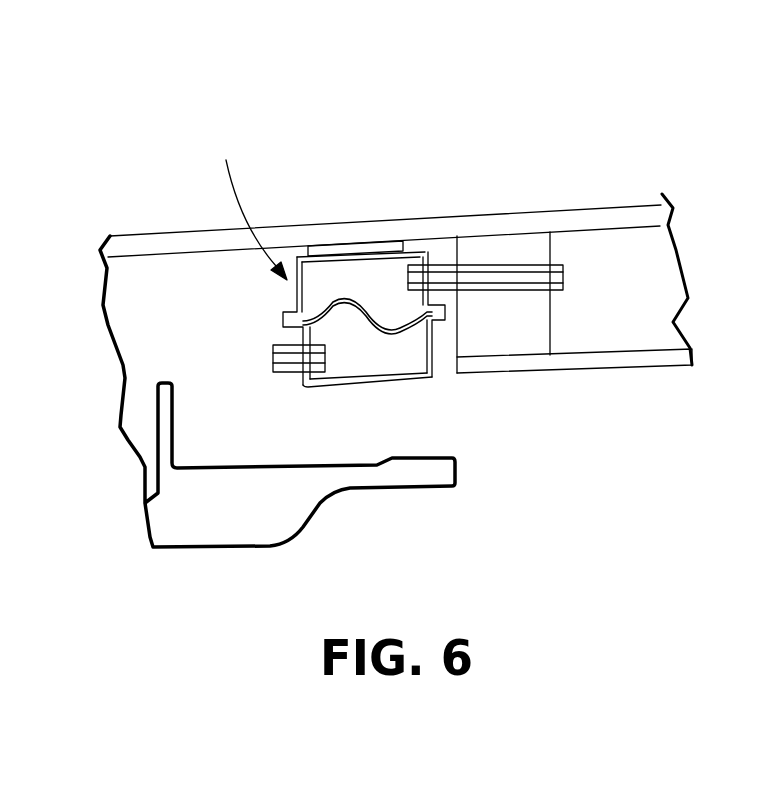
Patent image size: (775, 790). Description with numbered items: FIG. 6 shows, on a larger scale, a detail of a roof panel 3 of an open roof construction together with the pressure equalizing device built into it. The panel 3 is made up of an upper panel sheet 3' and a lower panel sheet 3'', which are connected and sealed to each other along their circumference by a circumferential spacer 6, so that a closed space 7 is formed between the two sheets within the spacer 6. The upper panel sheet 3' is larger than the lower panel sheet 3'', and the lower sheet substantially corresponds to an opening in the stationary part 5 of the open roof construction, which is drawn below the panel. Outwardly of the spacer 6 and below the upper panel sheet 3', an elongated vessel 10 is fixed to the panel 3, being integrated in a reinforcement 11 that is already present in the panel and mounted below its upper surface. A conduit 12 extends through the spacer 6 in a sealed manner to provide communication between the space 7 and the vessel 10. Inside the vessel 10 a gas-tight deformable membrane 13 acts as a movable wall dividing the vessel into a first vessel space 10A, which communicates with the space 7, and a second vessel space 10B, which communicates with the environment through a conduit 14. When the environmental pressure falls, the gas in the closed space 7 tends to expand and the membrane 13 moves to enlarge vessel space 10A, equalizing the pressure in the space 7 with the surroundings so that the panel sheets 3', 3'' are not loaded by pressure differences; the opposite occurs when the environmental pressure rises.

The panel 3 is at (384, 225).
The upper panel sheet 3' is at (394, 176).
The lower panel sheet 3'' is at (574, 404).
The stationary part 5 is at (217, 522).
The circumferential spacer 6 is at (518, 323).
The space 7 is at (652, 268).
The vessel 10 is at (312, 250).
The vessel space 10A is at (370, 285).
The vessel space 10B is at (407, 357).
The reinforcement 11 is at (251, 207).
The conduit 12 is at (555, 280).
The deformable membrane 13 is at (345, 300).
The conduit 14 is at (280, 358).